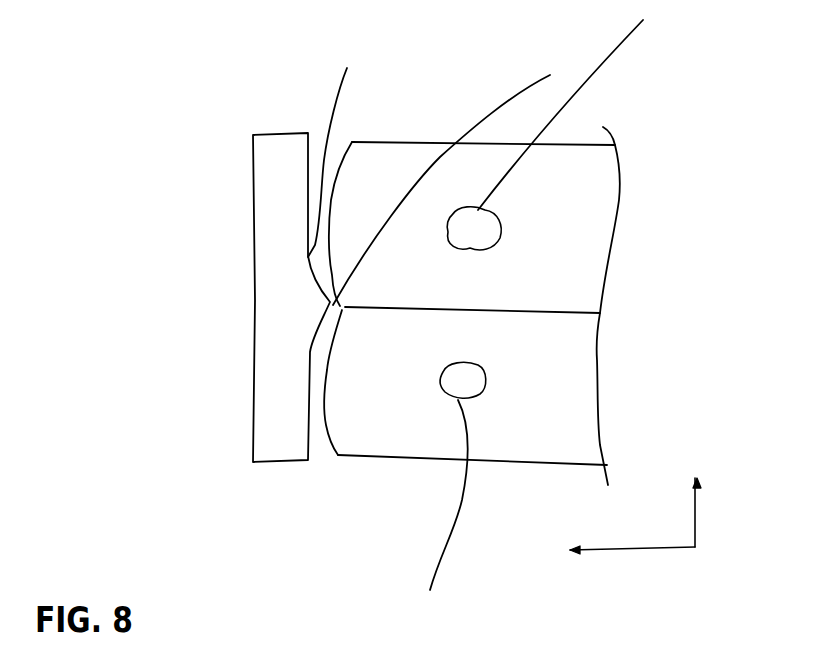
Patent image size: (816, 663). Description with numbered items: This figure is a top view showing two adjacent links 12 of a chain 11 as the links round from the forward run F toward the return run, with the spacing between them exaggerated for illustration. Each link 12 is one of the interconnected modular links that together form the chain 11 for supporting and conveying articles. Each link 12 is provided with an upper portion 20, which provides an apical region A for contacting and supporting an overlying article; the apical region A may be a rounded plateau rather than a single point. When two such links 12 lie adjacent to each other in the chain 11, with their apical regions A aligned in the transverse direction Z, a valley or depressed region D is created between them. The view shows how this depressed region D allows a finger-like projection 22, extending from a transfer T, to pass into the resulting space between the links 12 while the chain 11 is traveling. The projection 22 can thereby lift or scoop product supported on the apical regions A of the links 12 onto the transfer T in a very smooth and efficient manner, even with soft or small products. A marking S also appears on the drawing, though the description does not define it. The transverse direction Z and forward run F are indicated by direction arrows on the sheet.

The chain 11 is at (561, 263).
The link 12 is at (622, 125).
The upper portion 20 is at (432, 242).
The projection 22 is at (351, 147).
The transfer T is at (258, 306).
The surface S is at (412, 128).
The depressed region D is at (455, 179).
The apical region A is at (550, 320).
The transverse direction Z is at (697, 513).
The forward run F is at (630, 545).